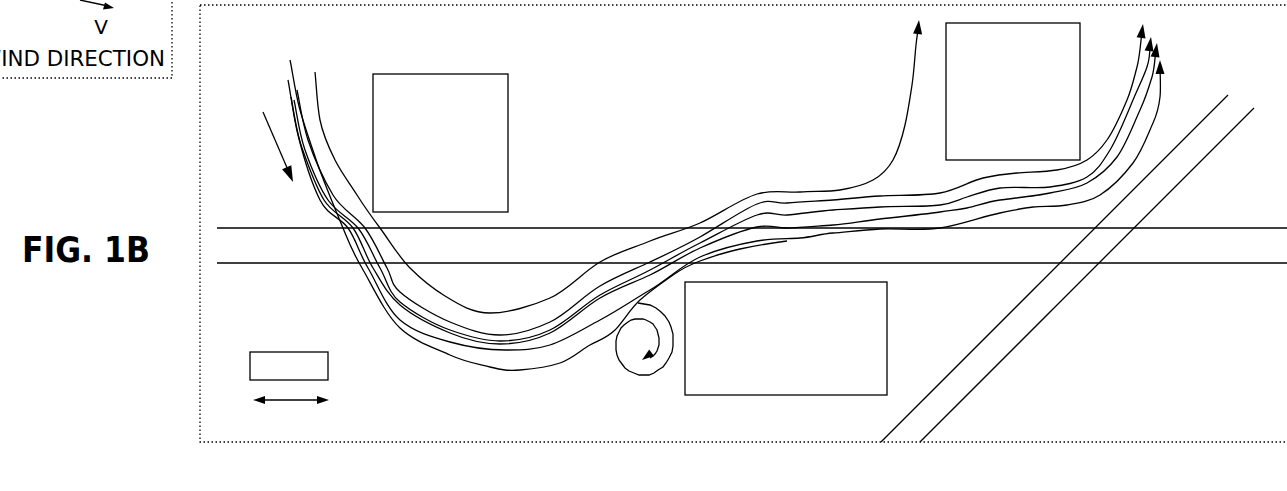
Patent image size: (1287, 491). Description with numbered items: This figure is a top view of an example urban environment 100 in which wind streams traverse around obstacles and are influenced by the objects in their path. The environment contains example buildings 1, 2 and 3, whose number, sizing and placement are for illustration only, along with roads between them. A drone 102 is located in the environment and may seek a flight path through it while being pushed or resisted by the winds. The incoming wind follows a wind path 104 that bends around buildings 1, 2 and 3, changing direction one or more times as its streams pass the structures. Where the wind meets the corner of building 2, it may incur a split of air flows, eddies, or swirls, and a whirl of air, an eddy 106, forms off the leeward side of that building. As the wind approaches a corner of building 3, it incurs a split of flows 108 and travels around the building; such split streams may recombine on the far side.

The urban environment 100 is at (1254, 390).
The drone 102 is at (330, 373).
The wind path 104 is at (260, 147).
The eddy 106 is at (618, 357).
The split of flows 108 is at (913, 62).
The building 1 is at (440, 143).
The building 2 is at (786, 338).
The building 3 is at (1013, 91).